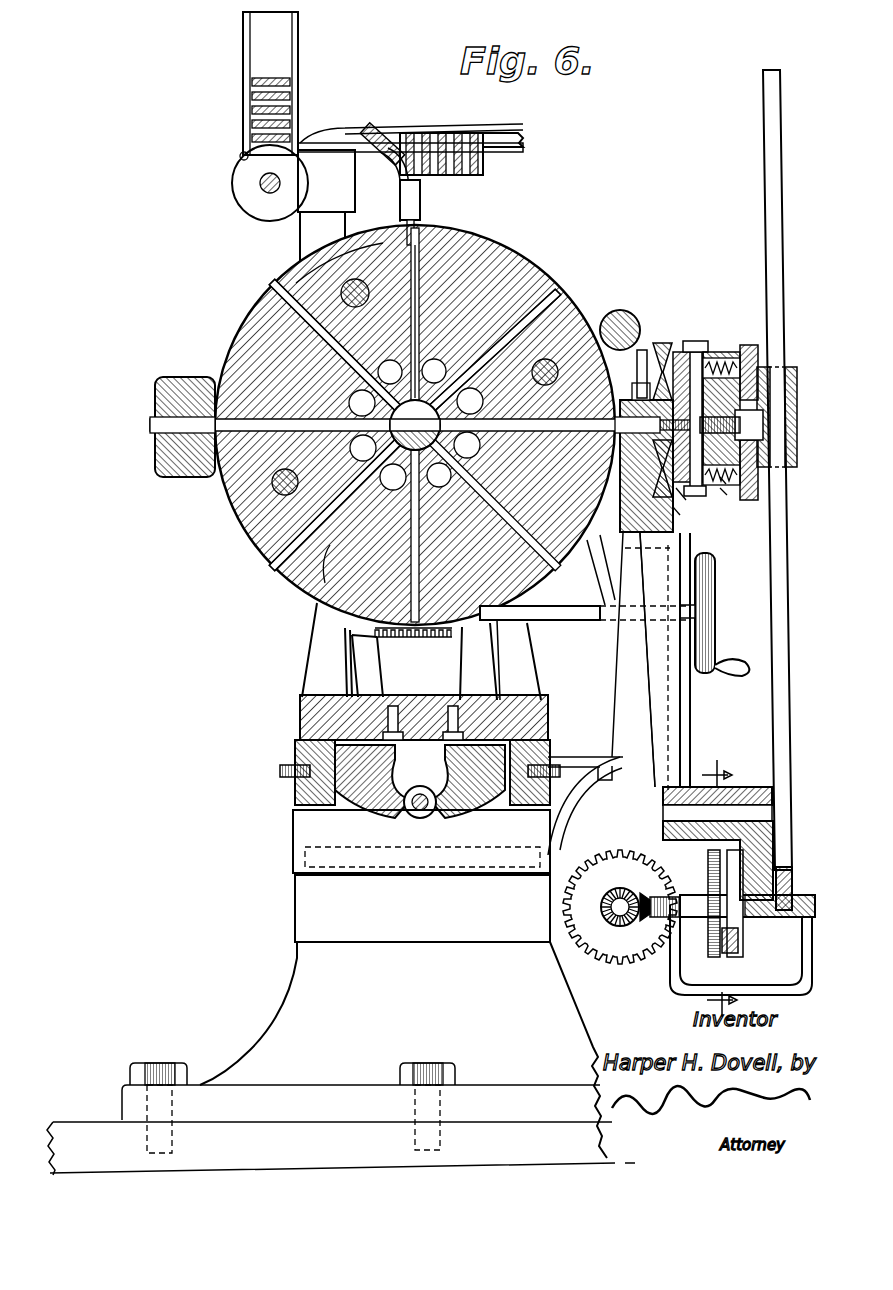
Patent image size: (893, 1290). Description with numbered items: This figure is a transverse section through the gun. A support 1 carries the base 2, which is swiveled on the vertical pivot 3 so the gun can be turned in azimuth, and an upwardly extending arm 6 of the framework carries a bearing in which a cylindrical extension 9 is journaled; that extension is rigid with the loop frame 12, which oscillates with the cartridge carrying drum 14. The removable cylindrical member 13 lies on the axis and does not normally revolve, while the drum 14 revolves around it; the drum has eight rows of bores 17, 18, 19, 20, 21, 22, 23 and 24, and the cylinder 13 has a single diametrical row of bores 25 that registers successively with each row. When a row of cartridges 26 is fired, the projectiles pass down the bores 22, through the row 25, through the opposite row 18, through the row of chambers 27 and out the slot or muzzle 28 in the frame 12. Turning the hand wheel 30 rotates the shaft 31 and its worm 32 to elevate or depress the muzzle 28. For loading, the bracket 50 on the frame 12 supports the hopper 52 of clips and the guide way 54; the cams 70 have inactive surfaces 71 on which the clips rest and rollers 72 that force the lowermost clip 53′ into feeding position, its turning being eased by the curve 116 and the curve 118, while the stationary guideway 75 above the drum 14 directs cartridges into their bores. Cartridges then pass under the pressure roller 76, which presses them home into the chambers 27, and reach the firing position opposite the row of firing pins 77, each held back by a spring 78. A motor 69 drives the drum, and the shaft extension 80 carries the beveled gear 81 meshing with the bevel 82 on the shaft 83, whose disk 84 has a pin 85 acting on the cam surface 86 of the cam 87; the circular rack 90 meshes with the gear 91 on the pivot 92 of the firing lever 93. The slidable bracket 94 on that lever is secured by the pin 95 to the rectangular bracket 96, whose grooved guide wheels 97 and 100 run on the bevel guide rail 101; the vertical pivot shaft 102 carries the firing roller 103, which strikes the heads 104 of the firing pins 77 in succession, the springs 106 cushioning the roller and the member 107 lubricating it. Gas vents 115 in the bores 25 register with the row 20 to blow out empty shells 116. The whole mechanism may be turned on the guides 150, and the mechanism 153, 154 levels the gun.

The support 1 is at (300, 1012).
The base of the gun 2 is at (310, 828).
The vertical pivot 3 is at (318, 882).
The arm 6 is at (318, 662).
The cylindrical extension 9 is at (719, 886).
The frame 12 is at (183, 378).
The removable cylindrical member 13 is at (467, 445).
The cartridge carrying drum 14 is at (510, 265).
The row of bores 17 is at (362, 403).
The row of bores 18 is at (262, 508).
The row of bores 19 is at (312, 578).
The row of bores 20 is at (400, 540).
The row of bores 21 is at (488, 618).
The row of bores 22 is at (598, 548).
The row of bores 23 is at (556, 303).
The row of bores 24 is at (355, 245).
The row of bores 25 is at (363, 448).
The cartridges 26 is at (408, 243).
The row of chambers 27 is at (268, 290).
The slot 28 is at (160, 430).
The hand wheel 30 is at (711, 608).
The shaft 31 is at (546, 606).
The worm 32 is at (438, 640).
The bracket 50 is at (300, 242).
The hopper 52 is at (245, 55).
The clip 53′ is at (412, 135).
The guide way 54 is at (506, 135).
The motor 69 is at (576, 765).
The cams 70 is at (242, 196).
The inactive surfaces 71 is at (307, 181).
The rollers 72 is at (240, 155).
The stationary guideway 75 is at (423, 202).
The pressure roller 76 is at (625, 311).
The firing pins 77 is at (640, 545).
The spring 78 is at (643, 387).
The shaft extension 80 is at (623, 912).
The beveled gear 81 is at (605, 925).
The bevel gear 82 is at (644, 925).
The shaft 83 is at (677, 887).
The disk 84 is at (708, 950).
The pin 85 is at (735, 953).
The cam surface 86 is at (707, 880).
The cam 87 is at (738, 788).
The circular rack 90 is at (765, 850).
The gear 91 is at (790, 890).
The pivot 92 is at (798, 968).
The firing lever 93 is at (776, 618).
The slidable bracket 94 is at (789, 364).
The pin 95 is at (764, 468).
The rectangular supporting bracket 96 is at (722, 480).
The guide wheel 97 is at (674, 508).
The guide wheel 100 is at (683, 370).
The bevel guide rail 101 is at (698, 345).
The vertical pivot shaft 102 is at (722, 490).
The firing roller 103 is at (746, 358).
The heads of firing pins 104 is at (678, 490).
The springs 106 is at (727, 356).
The member 107 is at (716, 356).
The gas vents 115 is at (393, 477).
The curve 116 is at (326, 138).
The curve 118 is at (392, 168).
The guides 150 is at (624, 594).
The leveling mechanism 153 is at (405, 814).
The leveling mechanism 154 is at (462, 802).